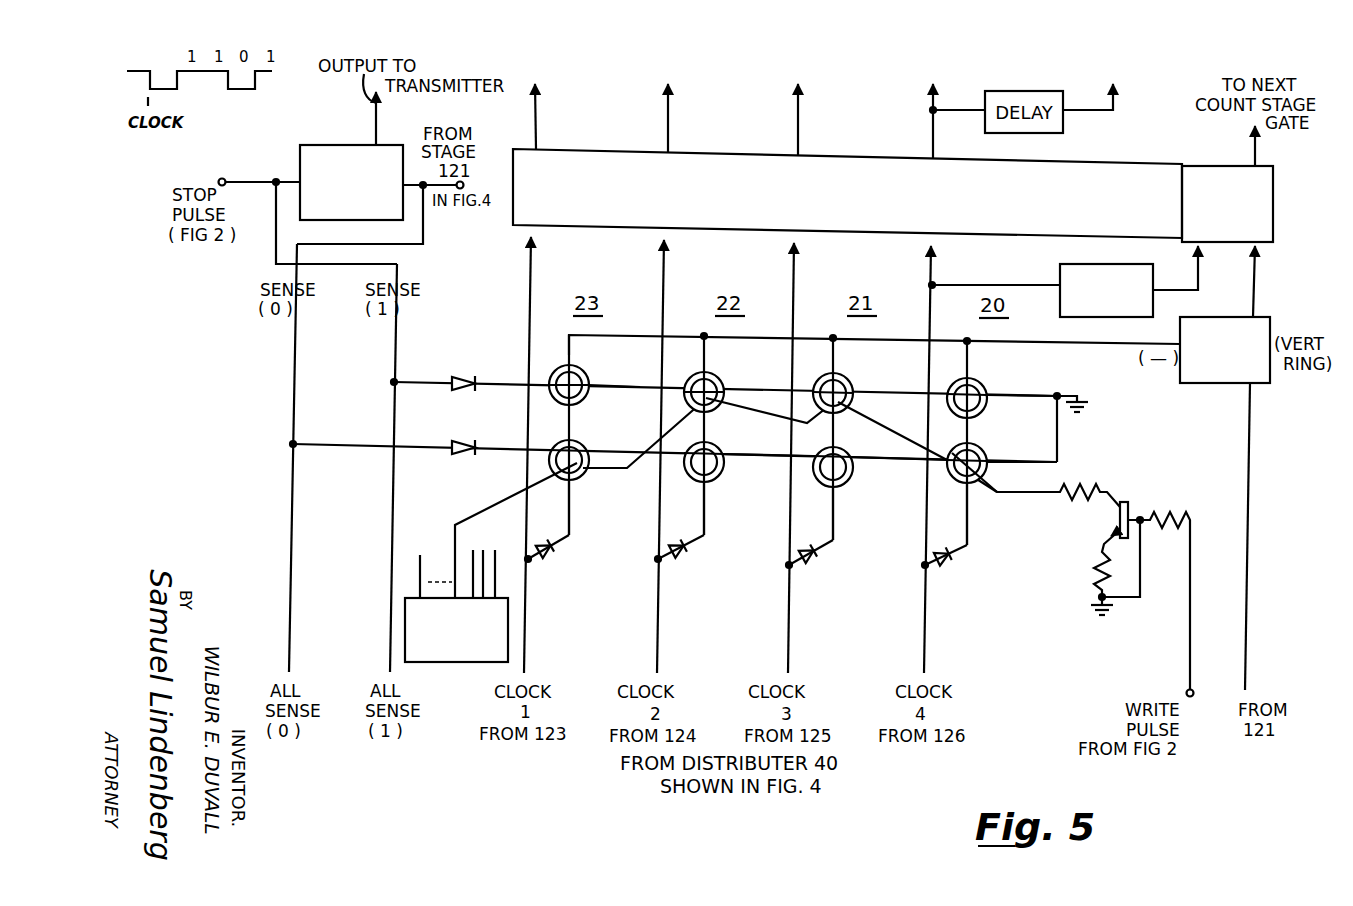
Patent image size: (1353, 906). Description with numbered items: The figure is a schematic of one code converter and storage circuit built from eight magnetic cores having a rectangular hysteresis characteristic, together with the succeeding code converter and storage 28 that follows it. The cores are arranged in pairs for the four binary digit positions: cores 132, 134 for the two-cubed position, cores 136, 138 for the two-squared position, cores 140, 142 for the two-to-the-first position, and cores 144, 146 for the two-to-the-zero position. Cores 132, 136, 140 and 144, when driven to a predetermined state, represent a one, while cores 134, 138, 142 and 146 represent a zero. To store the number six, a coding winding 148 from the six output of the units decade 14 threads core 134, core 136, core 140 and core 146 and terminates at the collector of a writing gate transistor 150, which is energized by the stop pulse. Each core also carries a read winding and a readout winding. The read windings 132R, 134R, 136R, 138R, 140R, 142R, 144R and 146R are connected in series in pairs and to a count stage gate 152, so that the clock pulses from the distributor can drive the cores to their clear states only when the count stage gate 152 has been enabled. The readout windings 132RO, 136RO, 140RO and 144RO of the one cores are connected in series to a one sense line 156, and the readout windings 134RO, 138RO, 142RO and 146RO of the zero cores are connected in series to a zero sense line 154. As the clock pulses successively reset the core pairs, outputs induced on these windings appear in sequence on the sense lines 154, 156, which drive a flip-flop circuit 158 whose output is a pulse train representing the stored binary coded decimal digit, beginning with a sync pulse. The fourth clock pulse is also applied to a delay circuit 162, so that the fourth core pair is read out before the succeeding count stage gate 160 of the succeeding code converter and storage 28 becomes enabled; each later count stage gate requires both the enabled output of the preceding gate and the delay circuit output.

The units decade 14 is at (441, 663).
The succeeding code converter and storage 28 is at (847, 193).
The magnetic core 132 is at (587, 382).
The read winding 132R is at (570, 359).
The readout winding 132RO is at (628, 389).
The magnetic core 134 is at (573, 438).
The read winding 134R is at (569, 498).
The readout winding 134RO is at (604, 454).
The magnetic core 136 is at (722, 383).
The read winding 136R is at (705, 359).
The readout winding 136RO is at (771, 391).
The magnetic core 138 is at (715, 449).
The read winding 138R is at (706, 507).
The readout winding 138RO is at (768, 456).
The magnetic core 140 is at (852, 385).
The read winding 140R is at (836, 365).
The readout winding 140RO is at (884, 397).
The magnetic core 142 is at (847, 483).
The read winding 142R is at (833, 512).
The readout winding 142RO is at (868, 462).
The magnetic core 144 is at (983, 391).
The read winding 144R is at (969, 364).
The readout winding 144RO is at (1024, 398).
The magnetic core 146 is at (973, 488).
The read winding 146R is at (968, 527).
The readout winding 146RO is at (1028, 464).
The coding winding 148 is at (497, 503).
The writing gate transistor 150 is at (1115, 520).
The count stage gate 152 is at (1272, 325).
The zero sense line 154 is at (291, 494).
The one sense line 156 is at (392, 512).
The flip-flop circuit 158 is at (316, 148).
The succeeding count stage gate 160 is at (1274, 188).
The delay circuit 162 is at (1111, 265).